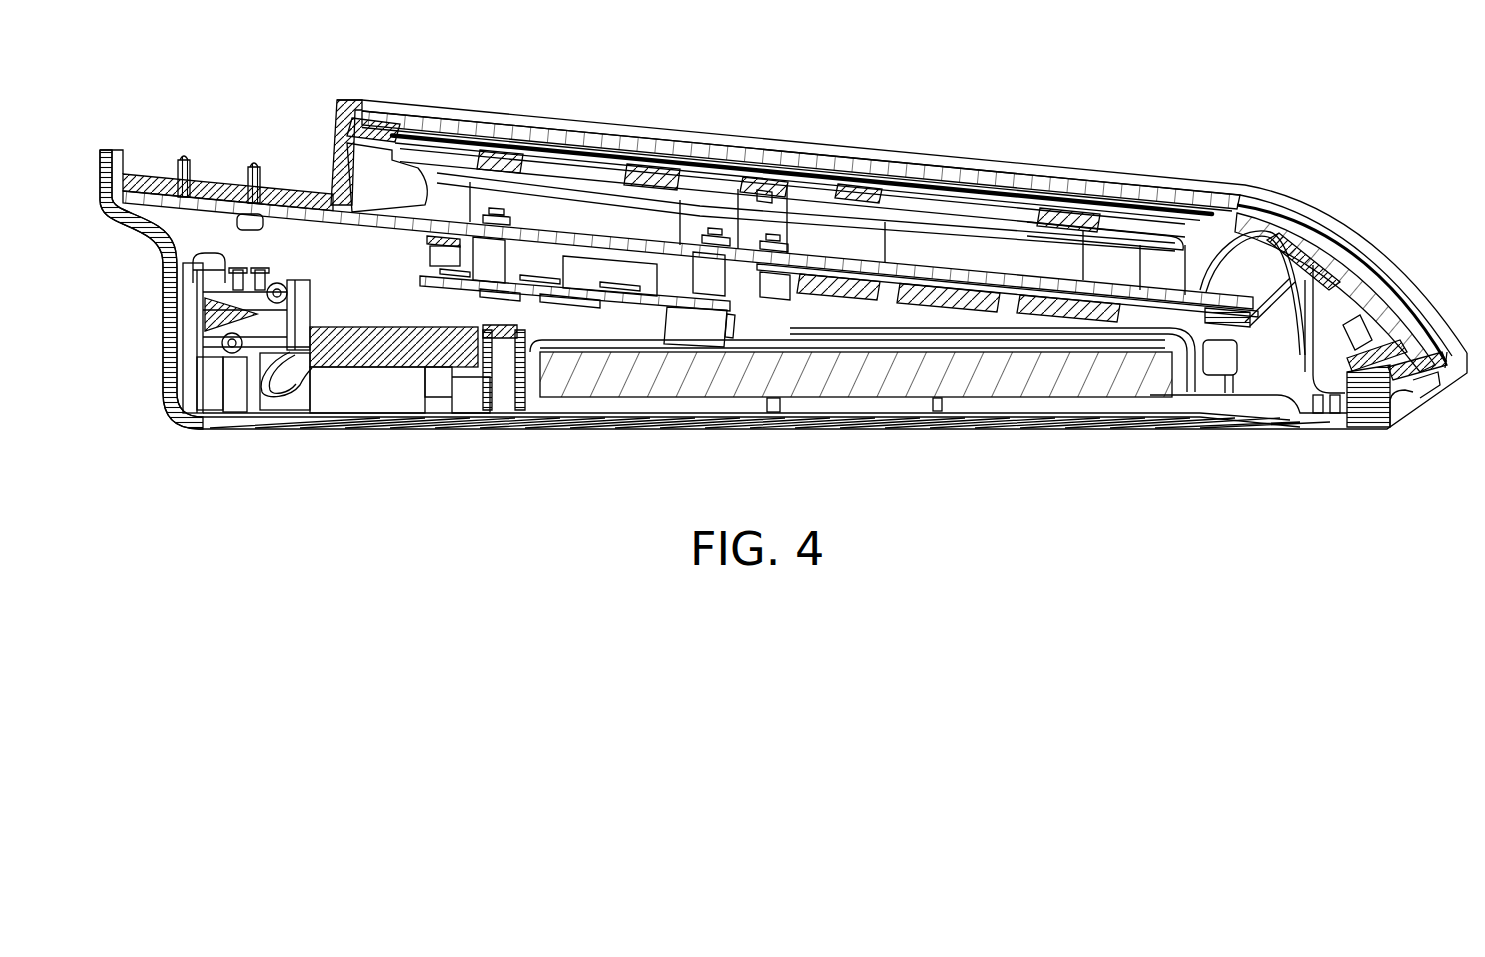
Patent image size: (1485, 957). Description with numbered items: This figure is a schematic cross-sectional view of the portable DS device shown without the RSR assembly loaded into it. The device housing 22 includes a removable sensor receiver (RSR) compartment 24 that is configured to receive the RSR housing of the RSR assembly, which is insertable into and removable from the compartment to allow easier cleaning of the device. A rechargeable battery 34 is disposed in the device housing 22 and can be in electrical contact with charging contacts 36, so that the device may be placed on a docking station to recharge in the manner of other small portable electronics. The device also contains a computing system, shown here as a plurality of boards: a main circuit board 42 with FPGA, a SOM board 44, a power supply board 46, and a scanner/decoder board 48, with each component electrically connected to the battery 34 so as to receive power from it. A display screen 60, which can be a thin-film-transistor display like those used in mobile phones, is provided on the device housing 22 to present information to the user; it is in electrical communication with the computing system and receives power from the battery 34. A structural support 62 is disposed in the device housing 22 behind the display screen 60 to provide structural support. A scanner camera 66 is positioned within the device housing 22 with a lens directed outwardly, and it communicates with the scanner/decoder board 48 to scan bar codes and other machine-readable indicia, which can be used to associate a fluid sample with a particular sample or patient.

The device housing 22 is at (772, 420).
The removable sensor receiver compartment 24 is at (333, 140).
The rechargeable battery 34 is at (950, 385).
The charging contacts 36 is at (1410, 393).
The main circuit board 42 is at (558, 232).
The SOM board 44 is at (998, 325).
The power supply board 46 is at (627, 317).
The scanner/decoder board 48 is at (382, 360).
The display screen 60 is at (990, 195).
The structural support 62 is at (760, 185).
The scanner camera 66 is at (243, 380).